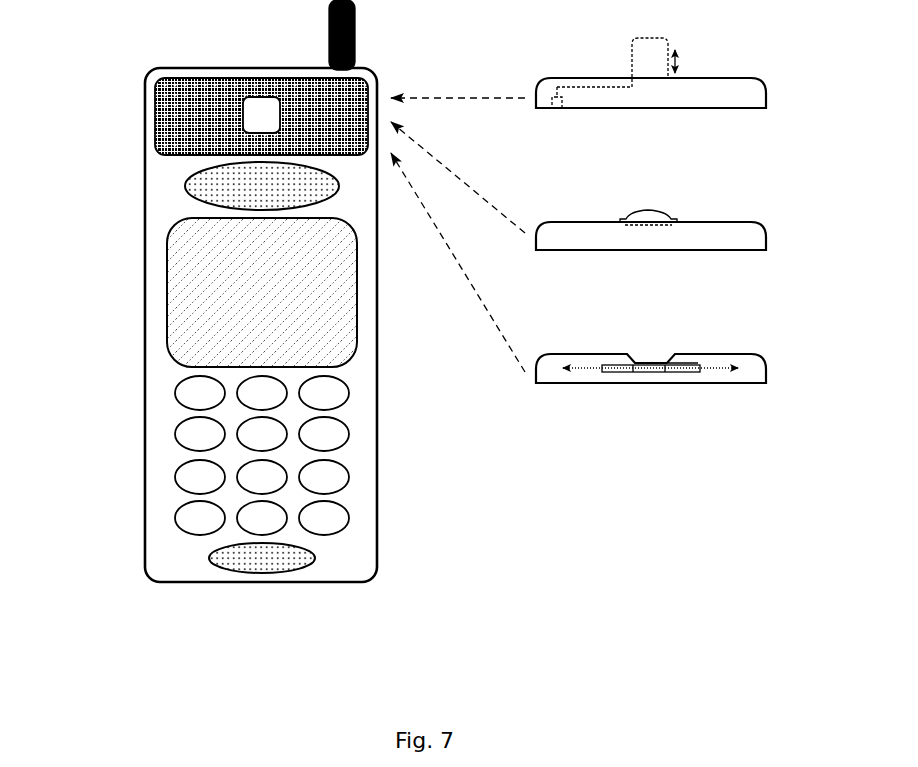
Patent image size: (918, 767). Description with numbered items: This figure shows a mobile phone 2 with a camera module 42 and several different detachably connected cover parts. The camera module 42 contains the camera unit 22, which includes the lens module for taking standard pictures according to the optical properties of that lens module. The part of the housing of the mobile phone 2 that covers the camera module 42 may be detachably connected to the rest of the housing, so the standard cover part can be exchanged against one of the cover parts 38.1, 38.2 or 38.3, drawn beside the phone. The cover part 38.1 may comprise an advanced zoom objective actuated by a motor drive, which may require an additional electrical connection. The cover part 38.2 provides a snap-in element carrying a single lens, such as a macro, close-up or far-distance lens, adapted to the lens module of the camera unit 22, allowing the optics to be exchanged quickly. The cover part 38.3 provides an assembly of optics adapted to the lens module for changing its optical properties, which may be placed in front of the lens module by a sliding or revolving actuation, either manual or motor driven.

The mobile phone 2 is at (218, 291).
The camera unit 22 is at (228, 81).
The camera module 42 is at (214, 92).
The cover part 38.1 is at (602, 60).
The cover part 38.2 is at (602, 186).
The cover part 38.3 is at (602, 268).